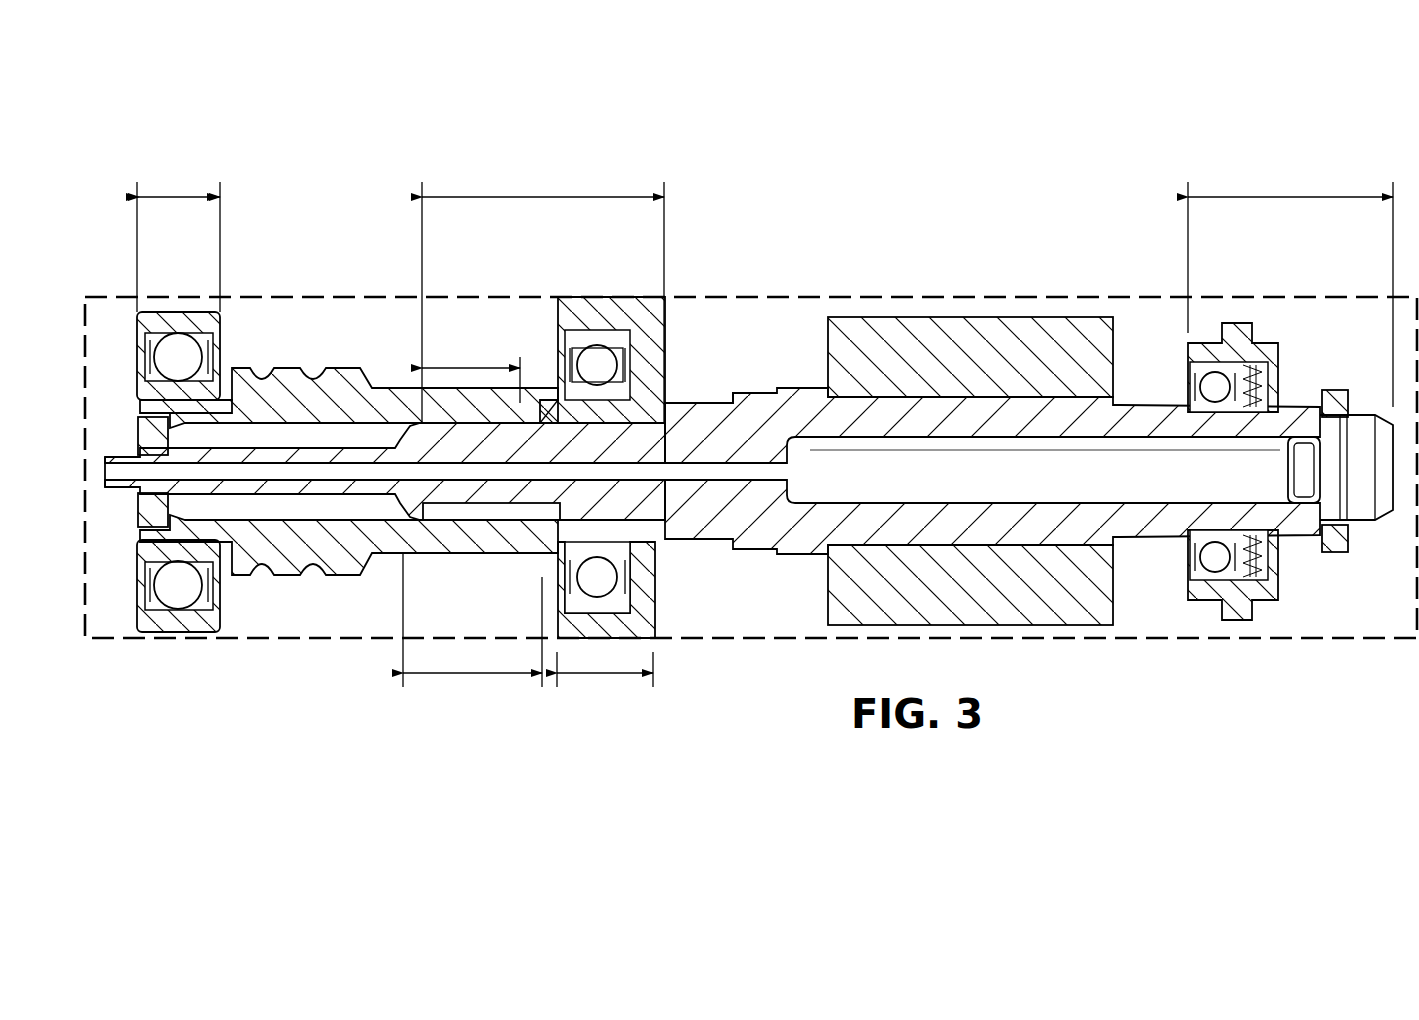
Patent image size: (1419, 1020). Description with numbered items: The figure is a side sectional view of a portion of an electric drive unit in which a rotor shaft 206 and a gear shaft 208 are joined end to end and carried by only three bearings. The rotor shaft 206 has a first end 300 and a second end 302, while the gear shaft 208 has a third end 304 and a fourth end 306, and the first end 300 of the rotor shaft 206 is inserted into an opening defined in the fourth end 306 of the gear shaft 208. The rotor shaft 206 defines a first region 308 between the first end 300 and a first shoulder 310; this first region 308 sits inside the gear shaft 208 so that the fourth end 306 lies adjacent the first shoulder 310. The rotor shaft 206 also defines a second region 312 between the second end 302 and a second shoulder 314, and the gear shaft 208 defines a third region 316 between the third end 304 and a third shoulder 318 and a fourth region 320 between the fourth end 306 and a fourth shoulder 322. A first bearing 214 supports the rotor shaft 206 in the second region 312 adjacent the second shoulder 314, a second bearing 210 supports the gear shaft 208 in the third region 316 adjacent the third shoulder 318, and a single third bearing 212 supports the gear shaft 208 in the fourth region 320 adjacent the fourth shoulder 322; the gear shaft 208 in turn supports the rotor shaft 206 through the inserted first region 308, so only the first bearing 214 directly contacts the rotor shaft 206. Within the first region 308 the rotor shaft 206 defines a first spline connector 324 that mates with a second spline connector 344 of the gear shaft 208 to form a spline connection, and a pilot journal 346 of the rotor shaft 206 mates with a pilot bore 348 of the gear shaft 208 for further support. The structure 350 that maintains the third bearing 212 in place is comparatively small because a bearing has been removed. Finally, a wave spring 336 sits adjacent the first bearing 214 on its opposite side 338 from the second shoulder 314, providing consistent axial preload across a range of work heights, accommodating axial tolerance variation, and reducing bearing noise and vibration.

The rotor shaft 206 is at (805, 547).
The gear shaft 208 is at (258, 574).
The second bearing 210 is at (192, 345).
The third bearing 212 is at (602, 352).
The first bearing 214 is at (1208, 357).
The first end 300 is at (412, 522).
The second end 302 is at (1393, 515).
The third end 304 is at (147, 522).
The fourth end 306 is at (665, 527).
The first region 308 is at (545, 193).
The first shoulder 310 is at (665, 403).
The second region 312 is at (1288, 193).
The second shoulder 314 is at (1188, 407).
The third region 316 is at (178, 193).
The third shoulder 318 is at (224, 390).
The fourth region 320 is at (605, 678).
The fourth shoulder 322 is at (560, 553).
The first spline connector 324 is at (470, 364).
The wave spring 336 is at (1280, 542).
The opposite side 338 is at (1256, 530).
The second spline connector 344 is at (470, 678).
The pilot journal 346 is at (637, 380).
The pilot bore 348 is at (577, 380).
The structure for maintaining bearing in place 350 is at (598, 358).